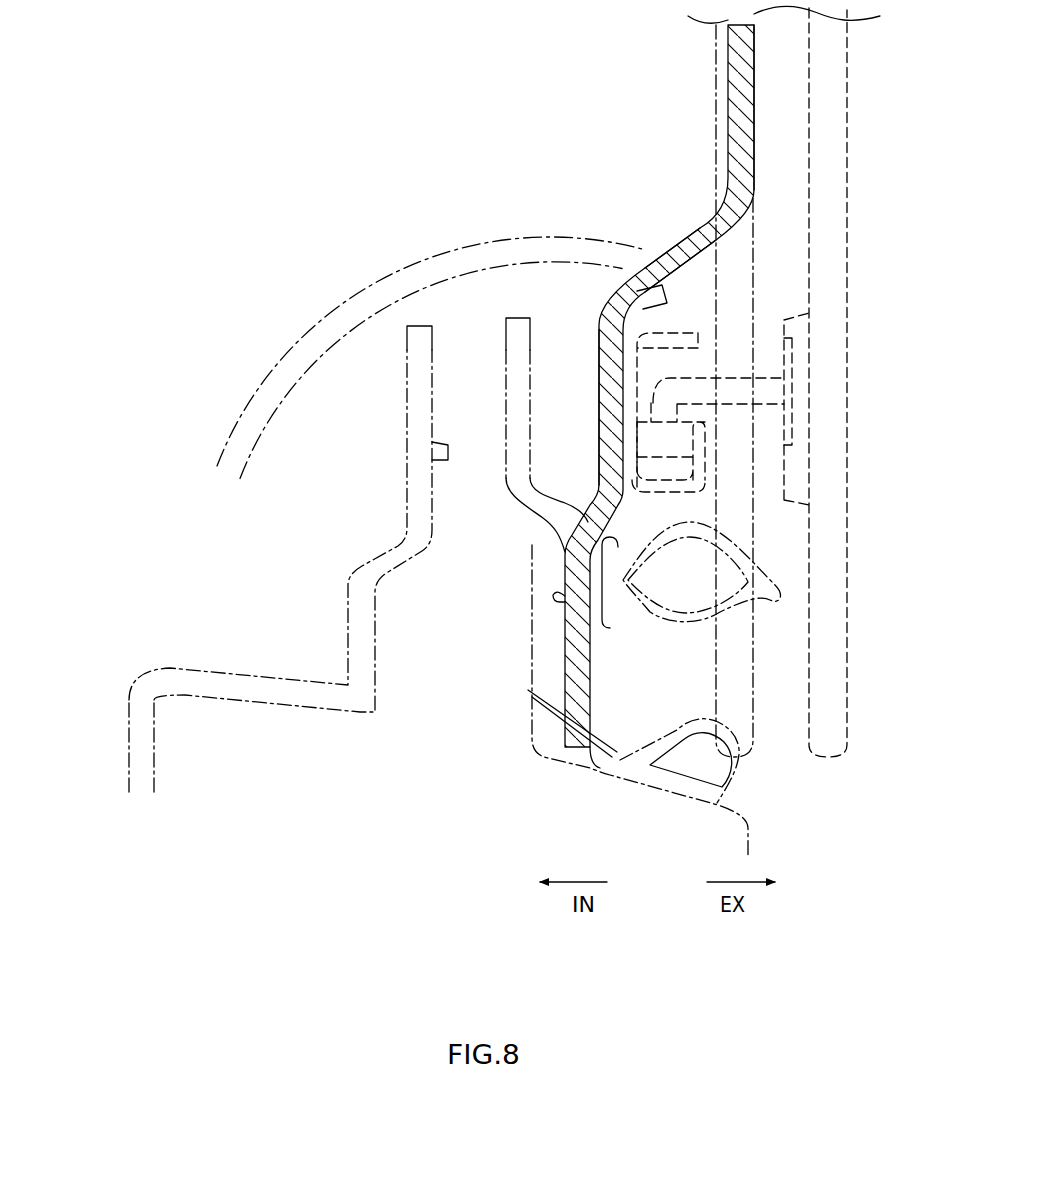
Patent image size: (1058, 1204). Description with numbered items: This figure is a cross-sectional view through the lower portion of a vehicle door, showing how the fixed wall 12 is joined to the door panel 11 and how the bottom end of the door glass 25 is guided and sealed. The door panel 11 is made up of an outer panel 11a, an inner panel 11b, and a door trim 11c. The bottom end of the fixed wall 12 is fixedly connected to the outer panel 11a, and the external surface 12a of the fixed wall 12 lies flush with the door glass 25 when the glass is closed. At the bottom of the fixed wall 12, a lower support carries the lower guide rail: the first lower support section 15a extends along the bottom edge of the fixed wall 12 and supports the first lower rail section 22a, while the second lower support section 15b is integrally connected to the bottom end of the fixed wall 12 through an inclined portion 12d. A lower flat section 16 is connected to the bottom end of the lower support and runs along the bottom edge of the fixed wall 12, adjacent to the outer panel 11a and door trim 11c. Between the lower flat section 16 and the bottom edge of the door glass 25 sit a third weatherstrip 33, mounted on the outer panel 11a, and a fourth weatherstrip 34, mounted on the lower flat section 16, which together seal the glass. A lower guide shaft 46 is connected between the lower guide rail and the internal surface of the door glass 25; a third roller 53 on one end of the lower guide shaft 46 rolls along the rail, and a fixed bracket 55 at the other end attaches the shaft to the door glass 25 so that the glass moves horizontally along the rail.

The door panel 11 is at (172, 625).
The outer panel 11a is at (748, 838).
The inner panel 11b is at (133, 750).
The door trim 11c is at (333, 305).
The fixed wall 12 is at (745, 55).
The external surface 12a is at (754, 108).
The inclined portion 12d is at (690, 250).
The first lower support section 15a is at (601, 352).
The second lower support section 15b is at (520, 408).
The lower flat section 16 is at (565, 663).
The first lower rail section 22a is at (697, 497).
The door glass 25 is at (835, 552).
The third weatherstrip 33 is at (733, 780).
The fourth weatherstrip 34 is at (780, 597).
The lower guide shaft 46 is at (790, 425).
The third roller 53 is at (651, 442).
The fixed bracket 55 is at (800, 473).